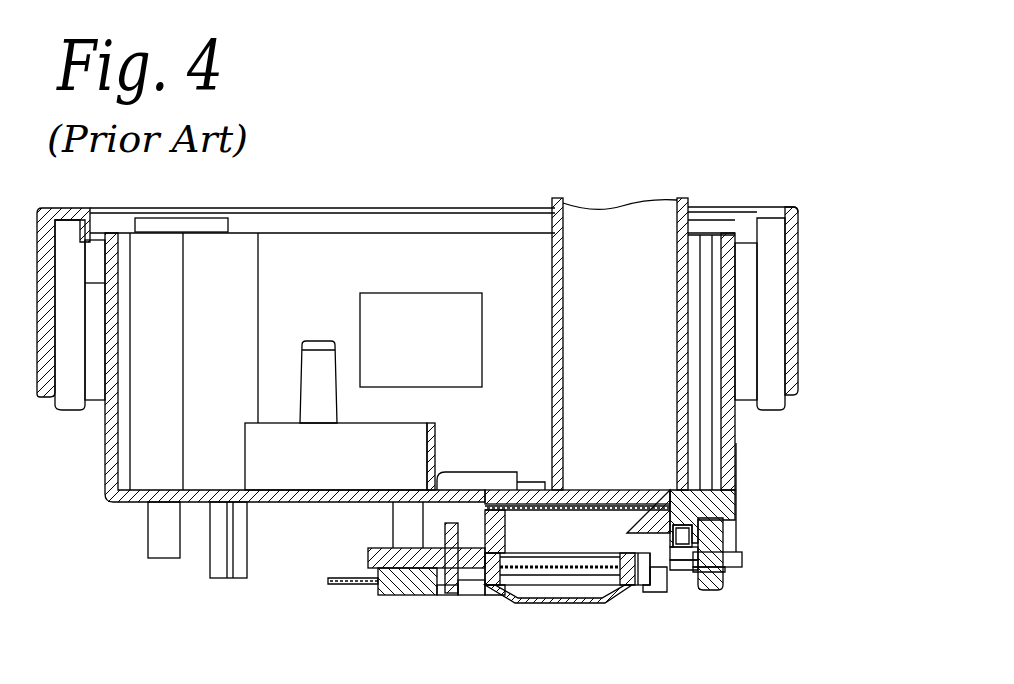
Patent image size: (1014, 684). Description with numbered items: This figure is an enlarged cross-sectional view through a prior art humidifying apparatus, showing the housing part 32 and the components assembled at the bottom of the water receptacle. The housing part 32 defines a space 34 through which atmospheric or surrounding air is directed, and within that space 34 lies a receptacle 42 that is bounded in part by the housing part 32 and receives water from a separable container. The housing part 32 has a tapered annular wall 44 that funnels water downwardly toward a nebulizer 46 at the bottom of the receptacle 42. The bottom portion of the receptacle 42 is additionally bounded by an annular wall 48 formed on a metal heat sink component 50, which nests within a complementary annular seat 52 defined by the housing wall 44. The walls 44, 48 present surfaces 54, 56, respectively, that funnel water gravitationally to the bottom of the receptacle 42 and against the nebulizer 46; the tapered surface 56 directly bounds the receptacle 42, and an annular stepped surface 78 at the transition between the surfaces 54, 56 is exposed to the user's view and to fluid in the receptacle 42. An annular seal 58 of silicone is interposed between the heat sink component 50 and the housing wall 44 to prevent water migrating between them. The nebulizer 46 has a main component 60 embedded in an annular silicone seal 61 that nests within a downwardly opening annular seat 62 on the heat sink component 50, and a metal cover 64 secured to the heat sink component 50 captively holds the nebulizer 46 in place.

The housing part 32 is at (610, 250).
The space 34 is at (592, 222).
The receptacle 42 is at (527, 563).
The tapered annular wall 44 is at (683, 547).
The nebulizer 46 is at (538, 515).
The annular wall 48 is at (615, 553).
The metal heat sink component 50 is at (740, 570).
The annular seat 52 is at (687, 495).
The surface 54 is at (688, 480).
The tapered surface 56 is at (573, 560).
The annular seal 58 is at (687, 528).
The main component 60 is at (500, 570).
The annular silicone seal 61 is at (497, 585).
The annular seat 62 is at (622, 565).
The metal cover 64 is at (563, 603).
The annular stepped surface 78 is at (665, 525).